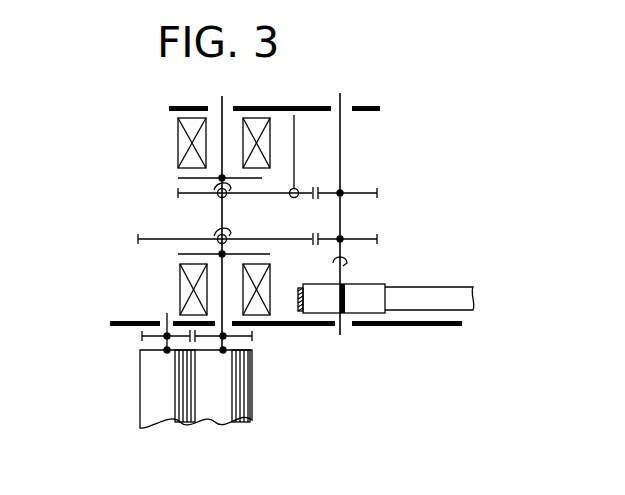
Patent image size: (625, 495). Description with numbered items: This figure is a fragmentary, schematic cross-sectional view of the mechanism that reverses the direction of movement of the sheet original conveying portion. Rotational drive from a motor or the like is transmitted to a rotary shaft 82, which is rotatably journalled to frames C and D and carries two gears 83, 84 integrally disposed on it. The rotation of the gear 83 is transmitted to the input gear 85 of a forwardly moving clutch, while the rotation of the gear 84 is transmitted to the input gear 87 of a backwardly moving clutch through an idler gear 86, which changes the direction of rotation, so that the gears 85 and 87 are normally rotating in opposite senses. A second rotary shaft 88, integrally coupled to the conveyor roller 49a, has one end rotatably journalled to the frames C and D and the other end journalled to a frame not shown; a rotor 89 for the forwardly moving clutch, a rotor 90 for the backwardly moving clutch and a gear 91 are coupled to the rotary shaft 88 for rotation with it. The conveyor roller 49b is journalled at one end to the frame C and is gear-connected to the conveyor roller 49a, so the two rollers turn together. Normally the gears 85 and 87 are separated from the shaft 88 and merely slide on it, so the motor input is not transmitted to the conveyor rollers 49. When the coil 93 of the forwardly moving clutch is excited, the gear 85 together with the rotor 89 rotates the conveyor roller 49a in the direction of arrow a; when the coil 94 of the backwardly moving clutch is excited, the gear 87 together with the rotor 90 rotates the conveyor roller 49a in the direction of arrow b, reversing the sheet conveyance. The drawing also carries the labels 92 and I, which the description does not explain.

The coil of the backwardly moving clutch 94 is at (178, 128).
The rotor for the backwardly moving clutch 90 is at (197, 180).
The arrow b is at (224, 172).
The idler gear 86 is at (294, 199).
The gear 84 is at (377, 192).
The input gear of the backwardly moving clutch 87 is at (252, 197).
The arrow a is at (215, 228).
The gear 83 is at (377, 239).
The rotor for the forwardly moving clutch 89 is at (192, 253).
The rotary shaft 88 is at (233, 260).
The coil of the forwardly moving clutch 93 is at (178, 290).
The input gear of the forwardly moving clutch 85 is at (307, 241).
The rotary shaft 82 is at (350, 268).
The frame D is at (362, 105).
The frame C is at (418, 327).
The line I is at (458, 287).
The wire 92 is at (150, 340).
The gear 91 is at (243, 340).
The conveyor rollers 49 is at (197, 393).
The conveyor roller 49a is at (253, 393).
The conveyor roller 49b is at (147, 410).